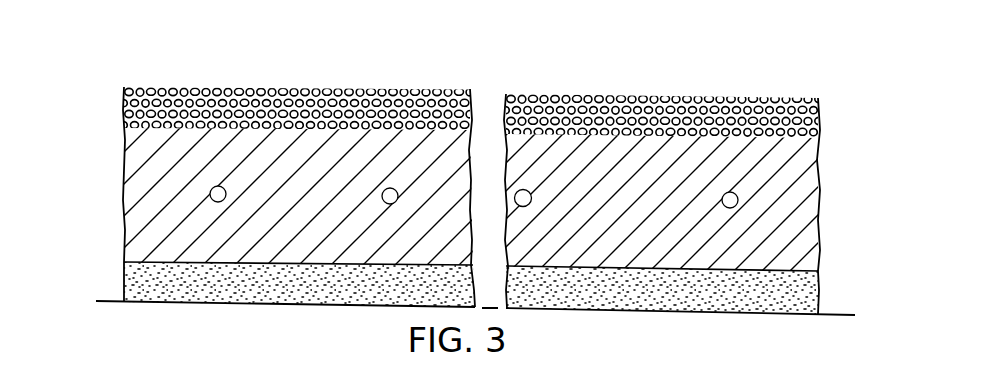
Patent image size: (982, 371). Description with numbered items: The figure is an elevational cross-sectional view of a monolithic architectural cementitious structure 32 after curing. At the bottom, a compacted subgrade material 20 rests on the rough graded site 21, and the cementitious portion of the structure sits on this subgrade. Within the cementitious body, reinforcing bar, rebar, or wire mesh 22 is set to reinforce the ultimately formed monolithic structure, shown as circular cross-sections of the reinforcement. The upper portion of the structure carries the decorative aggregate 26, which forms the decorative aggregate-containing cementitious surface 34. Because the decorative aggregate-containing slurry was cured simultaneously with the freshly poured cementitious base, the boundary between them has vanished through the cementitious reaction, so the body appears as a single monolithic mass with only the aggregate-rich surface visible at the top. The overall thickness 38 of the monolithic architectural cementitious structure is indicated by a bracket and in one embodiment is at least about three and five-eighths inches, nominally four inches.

The compacted subgrade material 20 is at (697, 293).
The rough graded site 21 is at (108, 301).
The wire mesh 22 is at (211, 192).
The decorative aggregate 26 is at (198, 89).
The monolithic architectural cementitious structure 32 is at (104, 157).
The decorative aggregate-containing cementitious surface 34 is at (471, 98).
The thickness of the monolithic architectural cementitious structure 38 is at (828, 98).